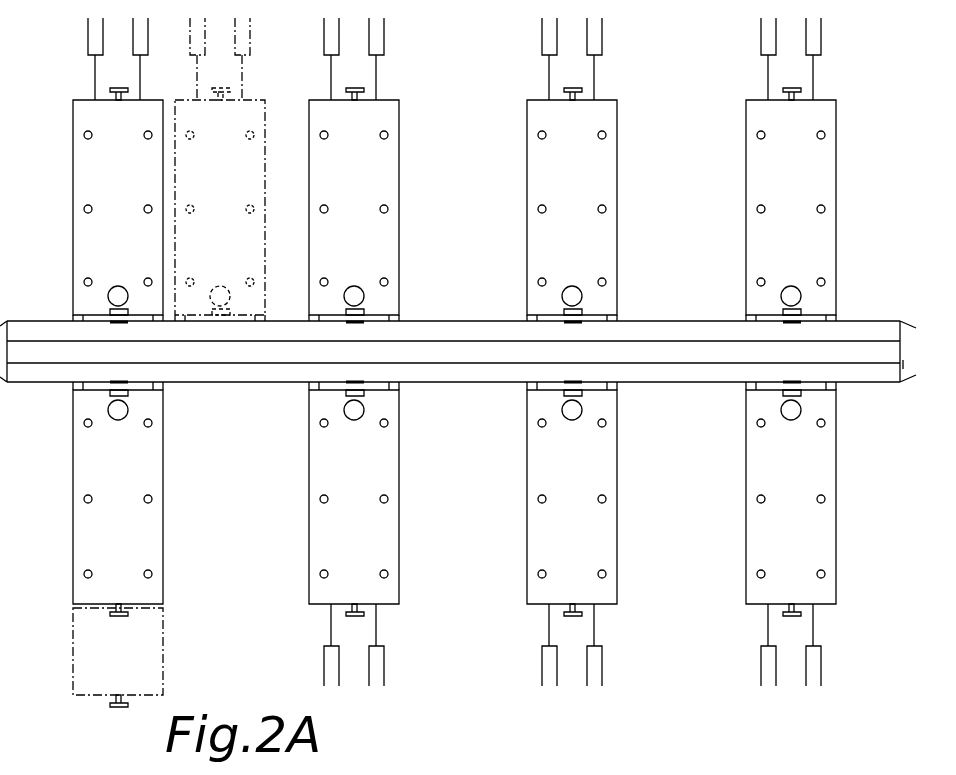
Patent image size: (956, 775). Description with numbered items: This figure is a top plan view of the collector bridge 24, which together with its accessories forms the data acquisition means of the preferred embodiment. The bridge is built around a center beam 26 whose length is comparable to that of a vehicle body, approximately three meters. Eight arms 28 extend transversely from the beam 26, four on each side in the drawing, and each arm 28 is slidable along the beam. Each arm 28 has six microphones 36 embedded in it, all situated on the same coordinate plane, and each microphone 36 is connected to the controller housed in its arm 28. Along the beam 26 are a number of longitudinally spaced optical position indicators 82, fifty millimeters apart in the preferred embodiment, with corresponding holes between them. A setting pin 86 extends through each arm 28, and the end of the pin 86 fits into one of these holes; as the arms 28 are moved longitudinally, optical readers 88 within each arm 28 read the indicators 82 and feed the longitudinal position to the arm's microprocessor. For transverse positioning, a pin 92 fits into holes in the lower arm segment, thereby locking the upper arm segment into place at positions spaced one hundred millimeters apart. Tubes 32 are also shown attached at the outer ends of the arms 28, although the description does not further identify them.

The collector bridge 24 is at (458, 391).
The center beam 26 is at (228, 378).
The arm 28 is at (72, 190).
The supply tube 32 is at (88, 45).
The microphone 36 is at (84, 135).
The optical position indicator 82 is at (117, 324).
The setting pin 86 is at (127, 67).
The optical reader 88 is at (583, 312).
The pin 92 is at (108, 296).